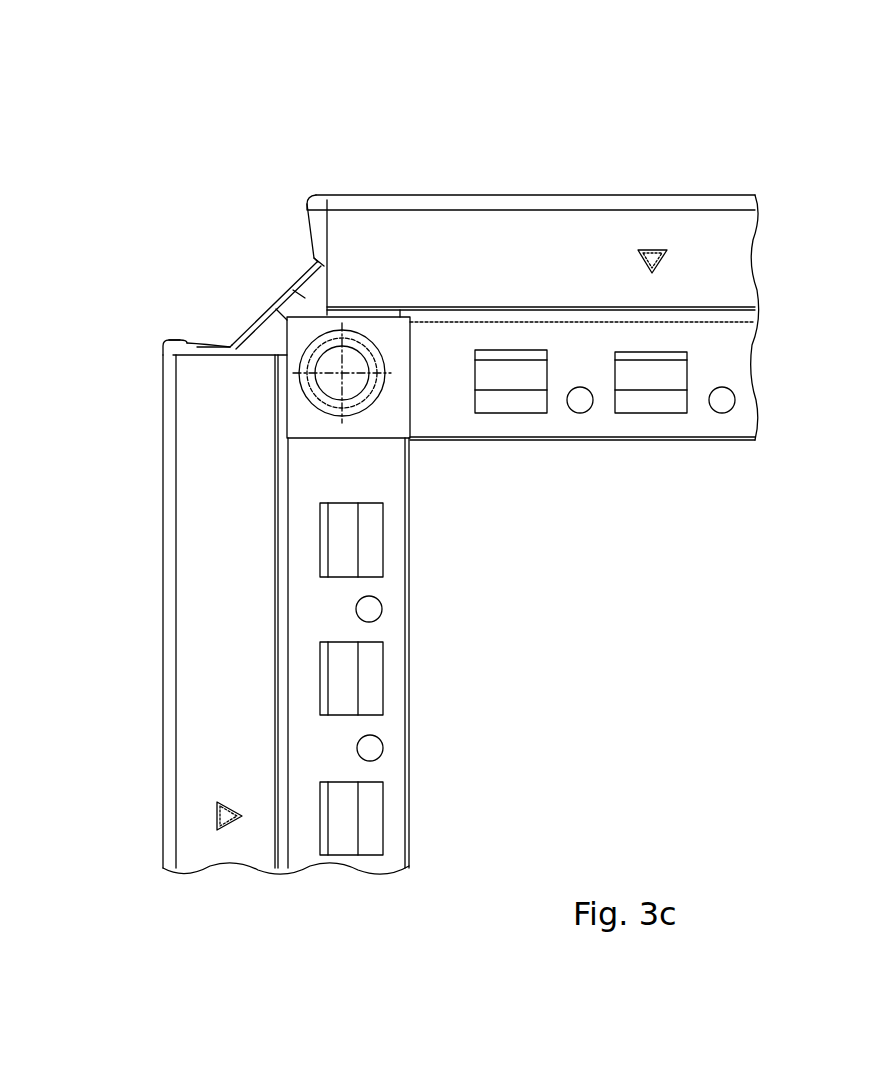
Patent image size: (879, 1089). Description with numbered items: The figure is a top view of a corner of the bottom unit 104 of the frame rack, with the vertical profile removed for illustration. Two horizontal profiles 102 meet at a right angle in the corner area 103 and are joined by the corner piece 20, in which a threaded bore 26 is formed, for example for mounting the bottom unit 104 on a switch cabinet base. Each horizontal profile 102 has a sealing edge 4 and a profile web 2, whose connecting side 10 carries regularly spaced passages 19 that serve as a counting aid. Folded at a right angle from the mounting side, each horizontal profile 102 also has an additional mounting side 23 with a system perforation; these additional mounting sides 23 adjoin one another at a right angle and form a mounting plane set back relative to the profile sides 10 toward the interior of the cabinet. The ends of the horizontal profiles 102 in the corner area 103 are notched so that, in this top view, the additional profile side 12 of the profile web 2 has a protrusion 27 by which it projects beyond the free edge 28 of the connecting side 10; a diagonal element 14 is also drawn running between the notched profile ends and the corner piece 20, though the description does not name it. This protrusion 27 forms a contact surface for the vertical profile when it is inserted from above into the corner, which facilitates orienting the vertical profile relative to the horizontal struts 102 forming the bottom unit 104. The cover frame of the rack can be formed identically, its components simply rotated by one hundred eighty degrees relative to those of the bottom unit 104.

The bottom unit 104 is at (292, 80).
The corner area 103 is at (188, 210).
The horizontal profile 102 is at (399, 480).
The sealing edge 4 is at (387, 195).
The profile web 2 is at (437, 200).
The connecting side 10 is at (485, 250).
The passage 19 is at (655, 248).
The additional profile side 12 is at (307, 204).
The protrusion 27 is at (314, 258).
The connecting web 14 is at (297, 291).
The free edge 28 is at (185, 345).
The corner piece 20 is at (390, 413).
The threaded bore 26 is at (365, 353).
The additional mounting side 23 is at (607, 420).